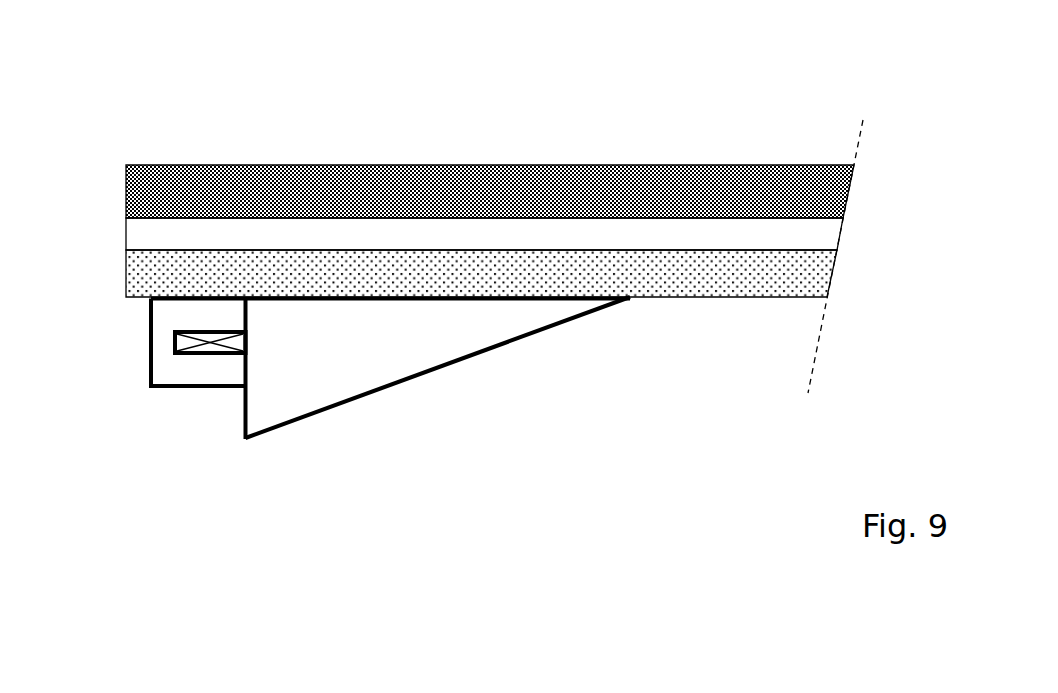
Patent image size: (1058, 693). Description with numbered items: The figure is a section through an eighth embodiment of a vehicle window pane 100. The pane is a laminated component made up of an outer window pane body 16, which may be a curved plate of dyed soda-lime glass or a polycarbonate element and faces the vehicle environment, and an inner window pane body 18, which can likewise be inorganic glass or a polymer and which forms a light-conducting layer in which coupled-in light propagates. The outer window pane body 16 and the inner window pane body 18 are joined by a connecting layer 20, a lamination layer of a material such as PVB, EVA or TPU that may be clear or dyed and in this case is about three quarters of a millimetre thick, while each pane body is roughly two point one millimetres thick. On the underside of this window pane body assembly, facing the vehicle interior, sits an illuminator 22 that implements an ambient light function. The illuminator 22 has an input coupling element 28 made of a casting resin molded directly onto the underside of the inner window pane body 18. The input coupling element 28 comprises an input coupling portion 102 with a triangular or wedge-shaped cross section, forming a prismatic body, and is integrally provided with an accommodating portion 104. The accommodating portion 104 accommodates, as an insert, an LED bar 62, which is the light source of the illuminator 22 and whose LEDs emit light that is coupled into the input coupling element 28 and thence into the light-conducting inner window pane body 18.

The vehicle window pane 100 is at (496, 210).
The outer window pane body 16 is at (175, 190).
The inner window pane body 18 is at (153, 280).
The connecting layer 20 is at (820, 225).
The illuminator 22 is at (438, 378).
The input coupling element 28 is at (556, 333).
The LED bar 62 is at (213, 348).
The input coupling portion 102 is at (432, 422).
The accommodating portion 104 is at (370, 406).